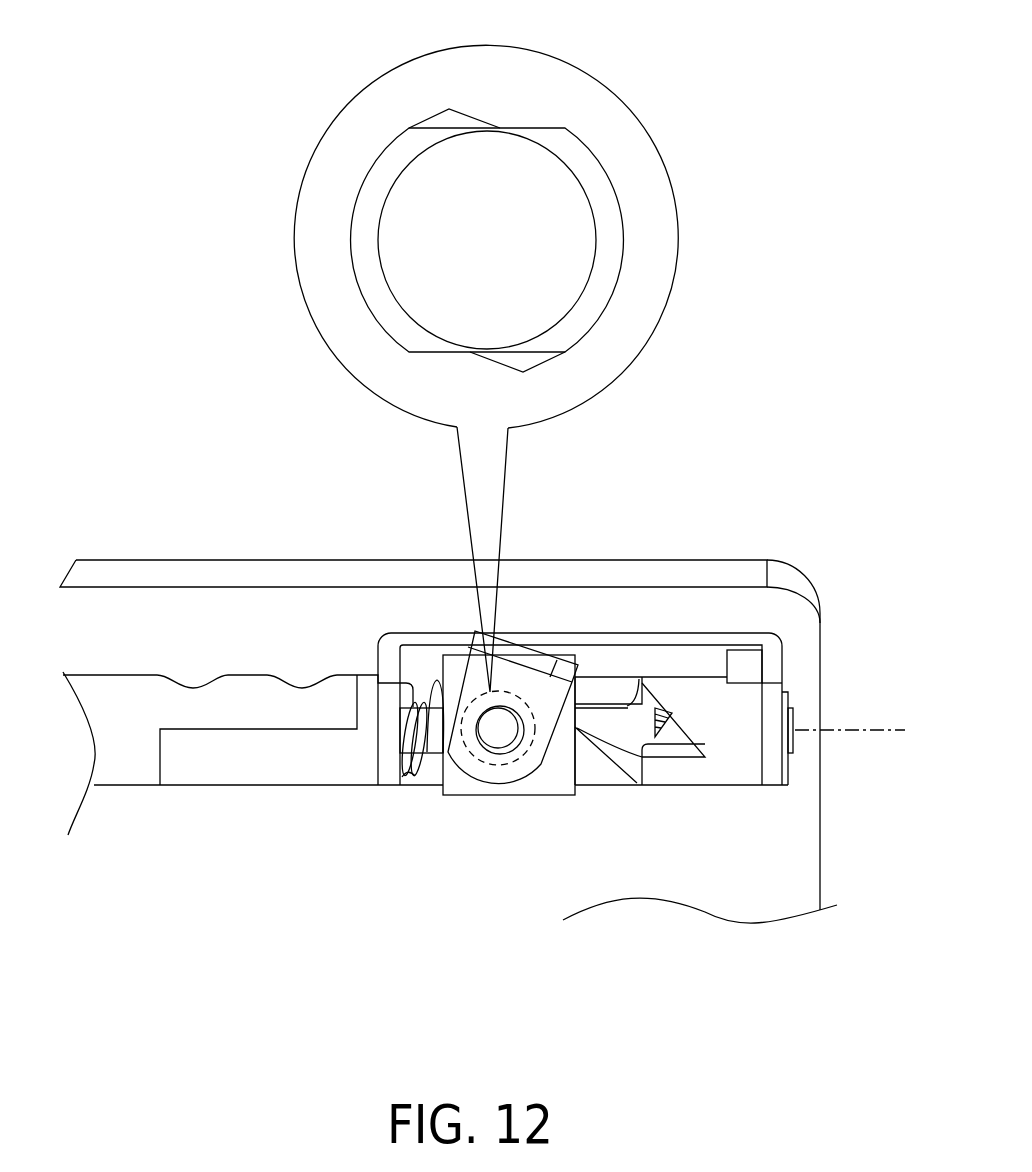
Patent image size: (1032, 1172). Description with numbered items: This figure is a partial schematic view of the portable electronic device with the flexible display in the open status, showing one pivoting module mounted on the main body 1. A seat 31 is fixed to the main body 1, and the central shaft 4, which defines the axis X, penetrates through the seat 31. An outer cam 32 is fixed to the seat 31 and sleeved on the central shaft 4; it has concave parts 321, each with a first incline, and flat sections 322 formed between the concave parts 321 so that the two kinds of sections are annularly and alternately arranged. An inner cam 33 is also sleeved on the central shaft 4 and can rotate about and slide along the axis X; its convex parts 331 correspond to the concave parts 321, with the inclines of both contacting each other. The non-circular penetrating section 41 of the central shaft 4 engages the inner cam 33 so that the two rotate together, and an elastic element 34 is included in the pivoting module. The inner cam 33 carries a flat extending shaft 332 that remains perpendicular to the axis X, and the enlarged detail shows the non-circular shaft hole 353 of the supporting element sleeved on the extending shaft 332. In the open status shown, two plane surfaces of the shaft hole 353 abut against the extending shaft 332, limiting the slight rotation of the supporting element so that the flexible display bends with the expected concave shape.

The main body 1 is at (800, 855).
The central shaft 4 is at (127, 764).
The penetrating section 41 is at (437, 757).
The elastic element 34 is at (411, 778).
The inner cam 33 is at (549, 780).
The convex part 331 is at (596, 683).
The extending shaft 332 is at (573, 243).
The shaft hole 353 is at (437, 120).
The outer cam 32 is at (727, 760).
The concave part 321 is at (662, 700).
The flat section 322 is at (609, 766).
The seat 31 is at (768, 760).
The axis X is at (878, 728).